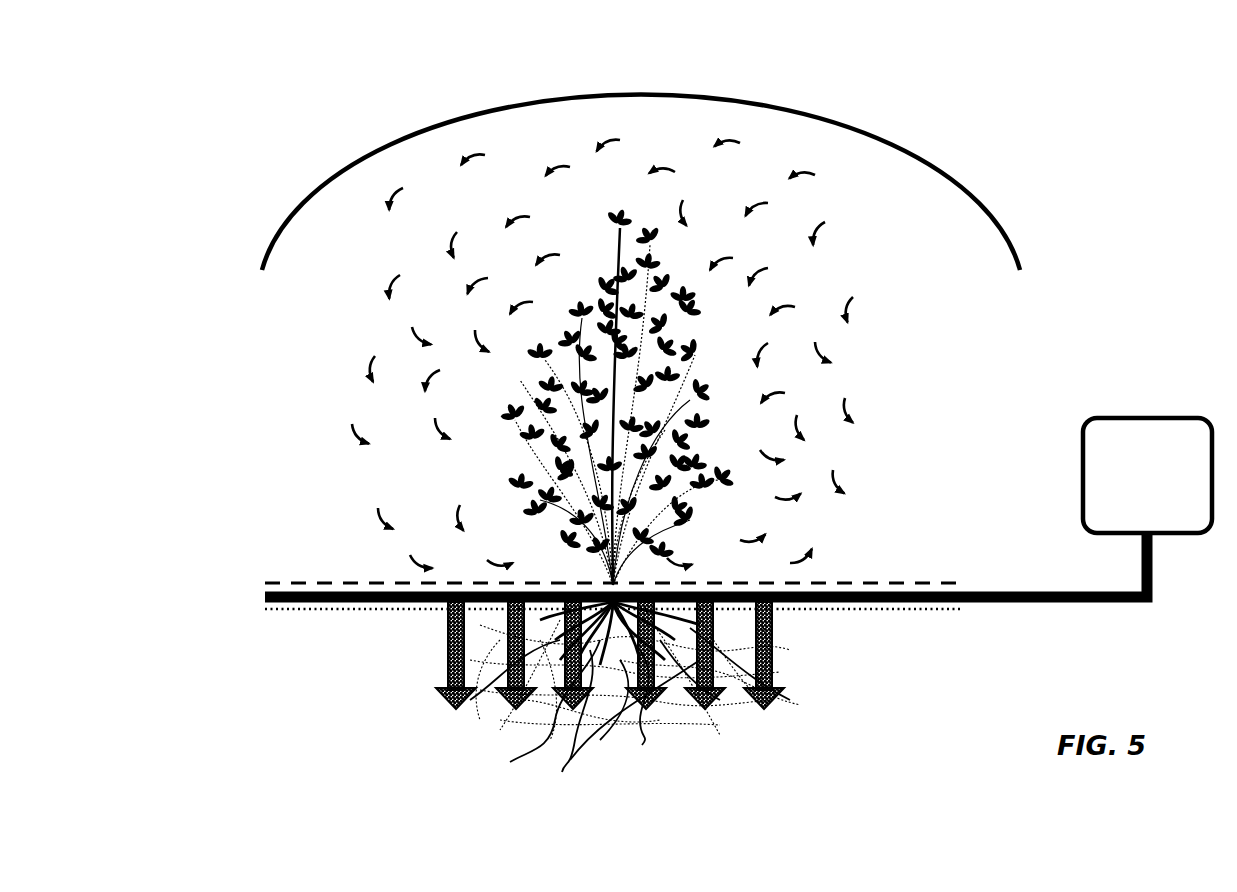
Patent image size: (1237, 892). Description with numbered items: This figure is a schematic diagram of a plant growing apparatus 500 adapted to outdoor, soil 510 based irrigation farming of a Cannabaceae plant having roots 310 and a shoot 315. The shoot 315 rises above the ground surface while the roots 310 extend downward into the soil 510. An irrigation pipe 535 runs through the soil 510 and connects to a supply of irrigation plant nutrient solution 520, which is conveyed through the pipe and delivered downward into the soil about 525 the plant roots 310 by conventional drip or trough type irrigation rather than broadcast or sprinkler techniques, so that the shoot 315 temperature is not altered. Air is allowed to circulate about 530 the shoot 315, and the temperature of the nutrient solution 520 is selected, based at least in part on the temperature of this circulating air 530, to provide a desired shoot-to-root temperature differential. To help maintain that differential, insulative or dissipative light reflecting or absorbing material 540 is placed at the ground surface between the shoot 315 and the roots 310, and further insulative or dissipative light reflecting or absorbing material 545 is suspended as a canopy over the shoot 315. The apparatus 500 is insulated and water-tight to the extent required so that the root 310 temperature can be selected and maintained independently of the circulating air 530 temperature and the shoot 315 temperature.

The plant growing apparatus 500 is at (246, 157).
The insulative or dissipative light reflecting or absorbing material 545 is at (1010, 213).
The circulating air 530 is at (820, 277).
The shoot 315 is at (507, 452).
The insulative or dissipative light reflecting or absorbing material 540 is at (916, 573).
The irrigation pipe 535 is at (1060, 617).
The irrigation plant nutrient solution 520 is at (1147, 475).
The outdoor soil 510 is at (438, 622).
The region about the plant roots 525 is at (640, 730).
The roots 310 is at (468, 727).